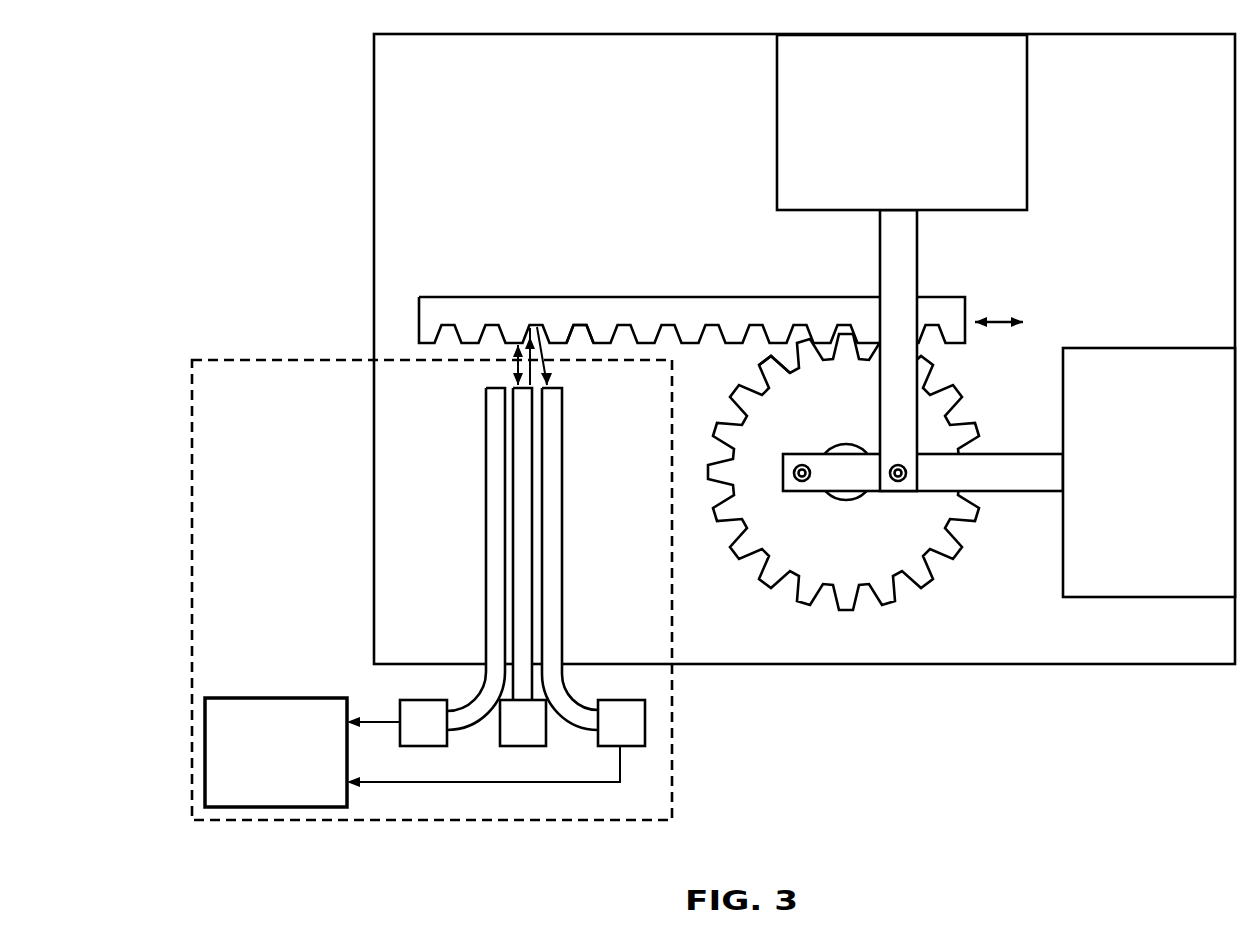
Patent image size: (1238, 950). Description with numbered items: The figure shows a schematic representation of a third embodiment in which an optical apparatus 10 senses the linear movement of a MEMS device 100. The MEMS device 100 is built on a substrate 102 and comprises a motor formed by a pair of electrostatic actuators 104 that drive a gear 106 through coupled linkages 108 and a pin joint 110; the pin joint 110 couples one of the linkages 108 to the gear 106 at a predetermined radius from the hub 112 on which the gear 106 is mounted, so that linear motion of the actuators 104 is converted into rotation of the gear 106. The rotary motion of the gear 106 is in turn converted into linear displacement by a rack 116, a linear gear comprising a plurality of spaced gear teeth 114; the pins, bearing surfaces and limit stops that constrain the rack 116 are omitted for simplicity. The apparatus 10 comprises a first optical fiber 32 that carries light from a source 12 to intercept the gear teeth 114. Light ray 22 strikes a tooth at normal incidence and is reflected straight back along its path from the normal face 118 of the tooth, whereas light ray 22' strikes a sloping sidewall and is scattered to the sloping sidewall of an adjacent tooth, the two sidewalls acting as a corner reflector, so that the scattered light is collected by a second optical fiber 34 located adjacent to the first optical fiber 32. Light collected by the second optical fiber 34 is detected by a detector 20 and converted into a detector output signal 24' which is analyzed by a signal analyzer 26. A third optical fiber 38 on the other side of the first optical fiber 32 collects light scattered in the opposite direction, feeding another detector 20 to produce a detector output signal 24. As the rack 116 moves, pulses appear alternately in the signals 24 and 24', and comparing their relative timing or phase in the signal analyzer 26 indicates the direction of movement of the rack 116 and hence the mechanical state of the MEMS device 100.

The optical apparatus 10 is at (292, 358).
The source 12 is at (538, 735).
The detector 20 is at (438, 735).
The light ray 22 is at (491, 360).
The light ray 22' is at (572, 359).
The detector output signal 24 is at (373, 702).
The detector output signal 24' is at (483, 761).
The signal analyzer 26 is at (290, 791).
The first optical fiber 32 is at (523, 607).
The second optical fiber 34 is at (565, 510).
The third optical fiber 38 is at (485, 510).
The MEMS device 100 is at (804, 429).
The substrate 102 is at (1158, 146).
The electrostatic actuators 104 is at (1006, 316).
The gear 106 is at (870, 568).
The linkages 108 is at (917, 262).
The pin joint 110 is at (798, 482).
The hub 112 is at (845, 445).
The gear teeth 114 is at (758, 326).
The rack 116 is at (635, 297).
The face 118 is at (562, 340).